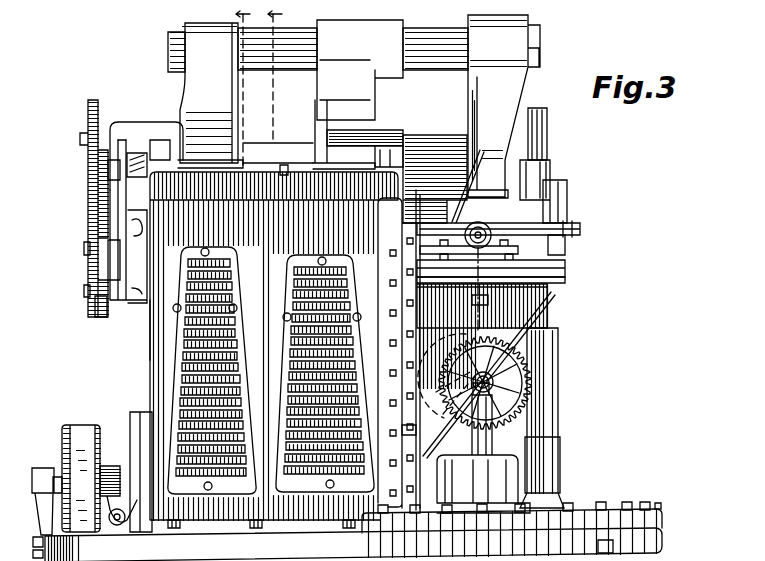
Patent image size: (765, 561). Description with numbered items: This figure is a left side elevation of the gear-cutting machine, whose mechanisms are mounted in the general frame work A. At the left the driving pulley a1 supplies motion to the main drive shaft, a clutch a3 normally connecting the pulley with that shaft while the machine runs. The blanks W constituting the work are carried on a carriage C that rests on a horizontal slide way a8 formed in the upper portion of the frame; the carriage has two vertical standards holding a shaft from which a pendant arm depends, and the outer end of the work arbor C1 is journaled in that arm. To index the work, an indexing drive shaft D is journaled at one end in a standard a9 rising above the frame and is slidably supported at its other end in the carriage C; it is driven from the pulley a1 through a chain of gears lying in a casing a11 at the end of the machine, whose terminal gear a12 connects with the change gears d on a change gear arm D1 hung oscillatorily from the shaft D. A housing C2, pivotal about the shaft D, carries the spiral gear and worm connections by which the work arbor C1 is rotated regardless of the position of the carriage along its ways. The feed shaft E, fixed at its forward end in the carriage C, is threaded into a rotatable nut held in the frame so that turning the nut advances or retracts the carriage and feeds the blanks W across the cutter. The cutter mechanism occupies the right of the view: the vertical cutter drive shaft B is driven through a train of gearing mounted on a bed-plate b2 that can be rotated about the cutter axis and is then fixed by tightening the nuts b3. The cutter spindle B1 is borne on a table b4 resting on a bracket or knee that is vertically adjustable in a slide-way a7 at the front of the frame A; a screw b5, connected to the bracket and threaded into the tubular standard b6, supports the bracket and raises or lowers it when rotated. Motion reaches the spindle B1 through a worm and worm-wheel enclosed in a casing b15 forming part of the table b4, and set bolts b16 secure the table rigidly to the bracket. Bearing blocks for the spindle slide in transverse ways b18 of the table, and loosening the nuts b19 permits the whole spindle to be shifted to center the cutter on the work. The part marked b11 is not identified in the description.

The frame work A is at (150, 318).
The driving pulley a1 is at (82, 424).
The clutch a3 is at (108, 468).
The slide-way a7 is at (408, 430).
The horizontal slide way a8 is at (296, 186).
The standard a9 is at (155, 128).
The casing a11 is at (146, 360).
The terminal gear a12 is at (96, 312).
The change gears d is at (88, 194).
The indexing drive shaft D is at (406, 130).
The change gear arm D1 is at (118, 228).
The carriage C is at (318, 90).
The work arbor C1 is at (488, 224).
The housing C2 is at (420, 38).
The blanks W is at (443, 138).
The feed shaft E is at (548, 135).
The cutter drive shaft B is at (548, 386).
The cutter spindle B1 is at (560, 196).
The bed-plate b2 is at (593, 510).
The nuts b3 is at (648, 505).
The table b4 is at (562, 262).
The screw b5 is at (510, 372).
The tubular standard b6 is at (492, 446).
The rod b11 is at (528, 422).
The casing b15 is at (548, 220).
The set bolts b16 is at (556, 236).
The transverse ways b18 is at (566, 270).
The nuts b19 is at (481, 156).